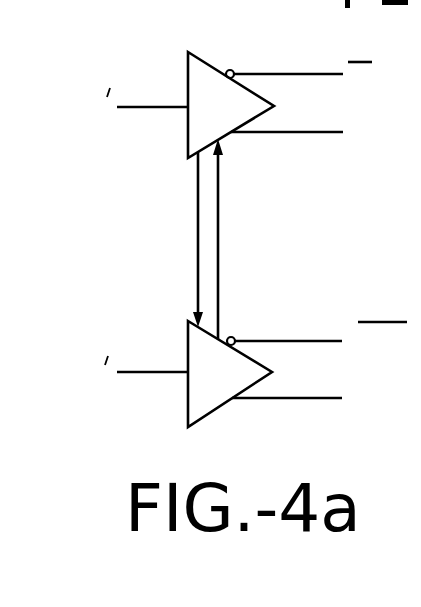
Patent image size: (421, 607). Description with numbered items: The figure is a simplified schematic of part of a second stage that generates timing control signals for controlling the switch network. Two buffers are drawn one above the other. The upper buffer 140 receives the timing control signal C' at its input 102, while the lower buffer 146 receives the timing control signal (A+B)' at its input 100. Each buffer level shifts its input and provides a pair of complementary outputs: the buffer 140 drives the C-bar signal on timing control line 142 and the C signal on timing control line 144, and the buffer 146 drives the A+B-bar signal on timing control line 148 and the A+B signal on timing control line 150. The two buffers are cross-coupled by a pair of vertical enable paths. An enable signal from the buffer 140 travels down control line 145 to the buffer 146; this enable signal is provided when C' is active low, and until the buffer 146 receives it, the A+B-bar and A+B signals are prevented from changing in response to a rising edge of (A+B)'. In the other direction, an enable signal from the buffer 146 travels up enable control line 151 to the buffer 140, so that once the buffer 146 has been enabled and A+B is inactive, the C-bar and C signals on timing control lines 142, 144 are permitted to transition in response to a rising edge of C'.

The input (A+B)' of second inverter 100 is at (175, 372).
The input C' of first inverter 102 is at (168, 107).
The buffer 140 is at (210, 70).
The timing control line 142 is at (292, 75).
The timing control line 144 is at (286, 132).
The control line 145 is at (198, 247).
The buffer 146 is at (208, 403).
The timing control line 148 is at (284, 341).
The timing control line 150 is at (283, 398).
The enable control line 151 is at (218, 232).